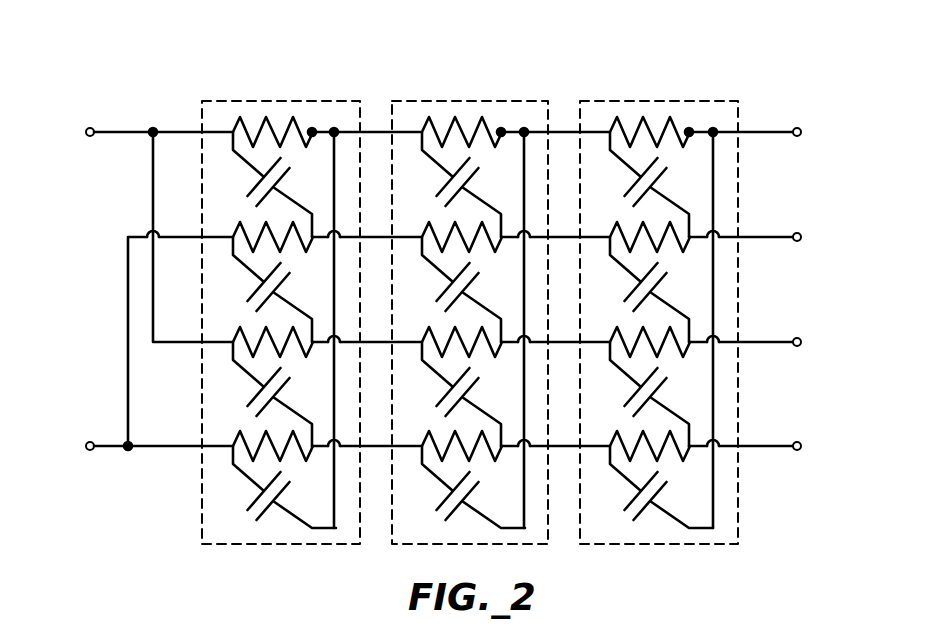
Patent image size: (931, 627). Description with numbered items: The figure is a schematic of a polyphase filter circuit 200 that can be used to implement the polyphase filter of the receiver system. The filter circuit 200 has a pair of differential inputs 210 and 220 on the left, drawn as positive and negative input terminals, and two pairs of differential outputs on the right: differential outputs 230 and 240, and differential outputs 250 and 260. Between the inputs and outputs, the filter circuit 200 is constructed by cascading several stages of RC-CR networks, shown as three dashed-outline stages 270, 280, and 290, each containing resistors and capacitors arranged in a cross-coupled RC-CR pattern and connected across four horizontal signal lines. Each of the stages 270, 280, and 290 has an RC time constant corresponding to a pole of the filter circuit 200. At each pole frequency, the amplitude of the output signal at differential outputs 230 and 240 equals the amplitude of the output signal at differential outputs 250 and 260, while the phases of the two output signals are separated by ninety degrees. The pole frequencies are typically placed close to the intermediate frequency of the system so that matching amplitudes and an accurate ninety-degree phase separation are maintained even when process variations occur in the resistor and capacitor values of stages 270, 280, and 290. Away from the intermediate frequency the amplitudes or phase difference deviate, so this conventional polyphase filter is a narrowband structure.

The filter circuit 200 is at (627, 48).
The differential input 210 is at (92, 127).
The differential input 220 is at (92, 452).
The differential output 230 is at (760, 129).
The differential output 240 is at (760, 339).
The differential output 250 is at (760, 234).
The differential output 260 is at (760, 444).
The RC-CR network stage 270 is at (270, 101).
The RC-CR network stage 280 is at (460, 101).
The RC-CR network stage 290 is at (648, 100).